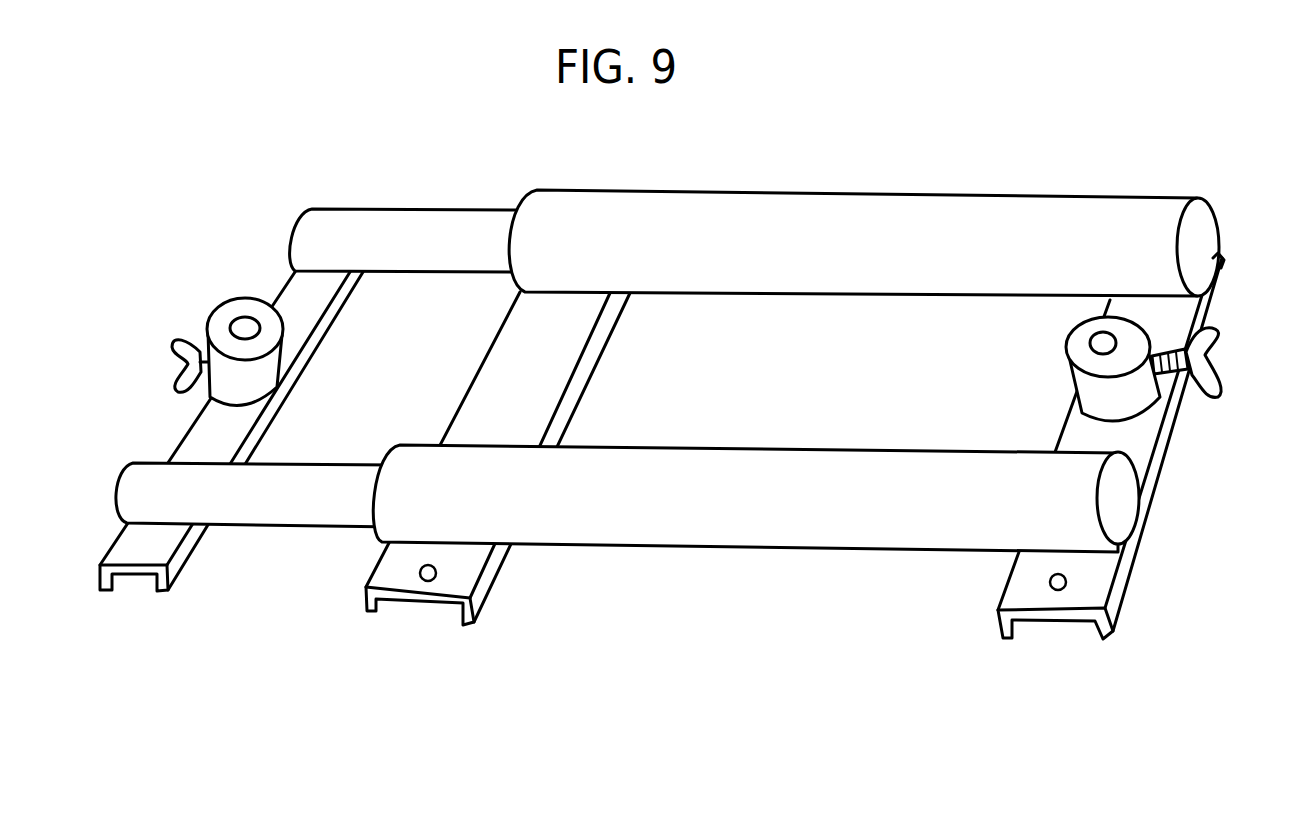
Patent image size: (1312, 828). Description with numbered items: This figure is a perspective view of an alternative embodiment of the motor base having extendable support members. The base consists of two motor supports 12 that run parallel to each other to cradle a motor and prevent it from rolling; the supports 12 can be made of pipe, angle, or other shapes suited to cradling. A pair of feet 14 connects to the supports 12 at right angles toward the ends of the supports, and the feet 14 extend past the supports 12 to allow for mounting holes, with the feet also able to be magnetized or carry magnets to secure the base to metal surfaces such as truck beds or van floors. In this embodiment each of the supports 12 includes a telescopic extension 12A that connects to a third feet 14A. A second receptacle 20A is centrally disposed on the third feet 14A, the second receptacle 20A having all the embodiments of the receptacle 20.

The motor support 12 is at (920, 240).
The telescopic extension 12A is at (310, 492).
The feet 14 is at (387, 583).
The third feet 14A is at (140, 548).
The receptacle 20 is at (1160, 325).
The second receptacle 20A is at (237, 295).